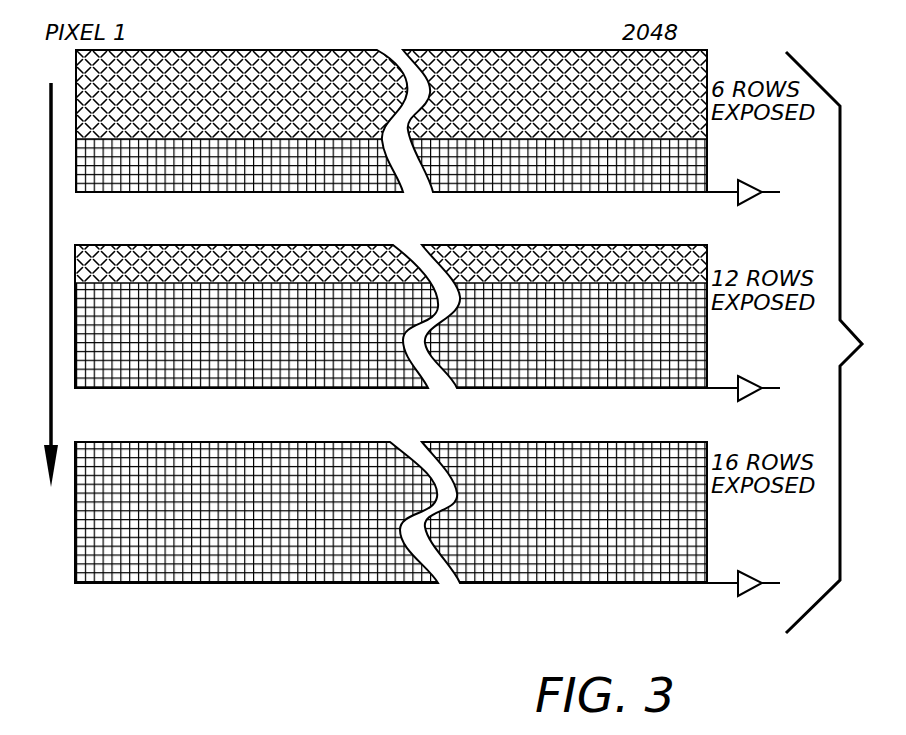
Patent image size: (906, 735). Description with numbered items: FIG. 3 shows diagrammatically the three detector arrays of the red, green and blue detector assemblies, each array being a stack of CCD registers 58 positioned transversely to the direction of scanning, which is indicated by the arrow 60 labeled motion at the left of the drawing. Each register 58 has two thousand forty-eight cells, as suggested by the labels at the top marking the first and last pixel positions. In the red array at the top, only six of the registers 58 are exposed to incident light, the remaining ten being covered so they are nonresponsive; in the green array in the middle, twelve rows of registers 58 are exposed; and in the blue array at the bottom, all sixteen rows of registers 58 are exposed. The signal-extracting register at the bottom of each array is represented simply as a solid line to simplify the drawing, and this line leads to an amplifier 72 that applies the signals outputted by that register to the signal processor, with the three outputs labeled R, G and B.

The CCD registers 58 is at (707, 172).
The amplifier 72 is at (750, 186).
The arrow 60 is at (50, 404).